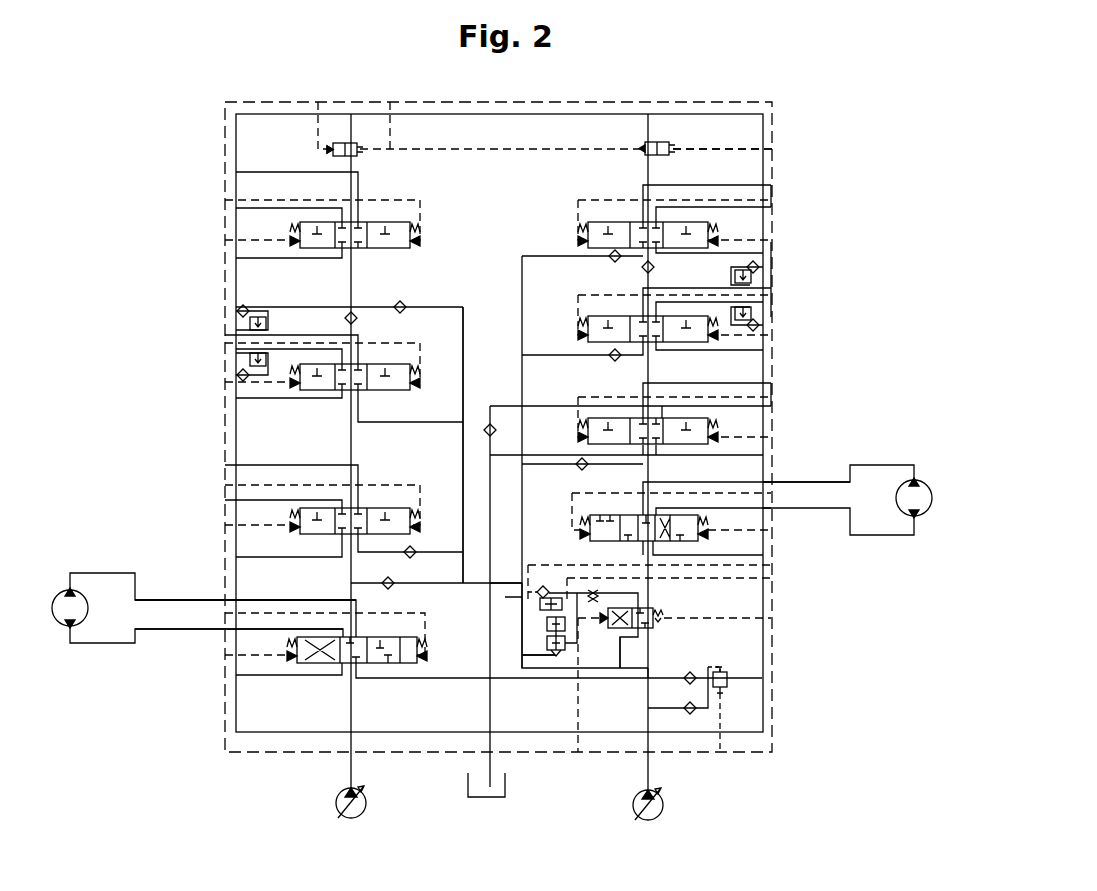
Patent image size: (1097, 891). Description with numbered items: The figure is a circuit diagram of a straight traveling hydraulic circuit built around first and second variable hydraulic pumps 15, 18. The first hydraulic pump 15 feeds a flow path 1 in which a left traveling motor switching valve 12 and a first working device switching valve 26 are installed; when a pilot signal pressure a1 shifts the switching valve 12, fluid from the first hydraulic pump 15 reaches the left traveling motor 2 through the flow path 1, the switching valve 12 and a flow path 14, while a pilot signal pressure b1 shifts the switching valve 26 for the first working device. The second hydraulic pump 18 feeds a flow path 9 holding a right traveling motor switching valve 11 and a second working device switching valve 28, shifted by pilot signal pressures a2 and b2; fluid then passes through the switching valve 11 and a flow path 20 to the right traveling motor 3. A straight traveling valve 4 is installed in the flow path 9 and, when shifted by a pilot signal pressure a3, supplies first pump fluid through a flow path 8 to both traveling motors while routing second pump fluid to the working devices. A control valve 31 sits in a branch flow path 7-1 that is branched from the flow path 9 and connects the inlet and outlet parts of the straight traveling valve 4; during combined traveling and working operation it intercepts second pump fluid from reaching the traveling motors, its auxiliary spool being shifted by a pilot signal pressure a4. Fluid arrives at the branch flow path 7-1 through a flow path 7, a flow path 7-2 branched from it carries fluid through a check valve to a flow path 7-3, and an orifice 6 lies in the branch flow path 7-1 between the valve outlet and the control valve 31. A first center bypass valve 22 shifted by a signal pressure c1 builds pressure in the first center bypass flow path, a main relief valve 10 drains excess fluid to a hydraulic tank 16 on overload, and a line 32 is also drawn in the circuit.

The flow path 1 is at (353, 703).
The left traveling motor 2 is at (60, 592).
The right traveling motor 3 is at (925, 483).
The straight traveling valve 4 is at (653, 603).
The orifice 6 is at (592, 592).
The flow path 7 is at (521, 530).
The branch flow path 7-1 is at (538, 655).
The flow path 7-2 is at (505, 597).
The flow path 7-3 is at (552, 586).
The flow path 8 is at (620, 645).
The flow path 9 is at (652, 648).
The main relief valve 10 is at (725, 671).
The switching valve 11 is at (683, 514).
The switching valve 12 is at (393, 638).
The flow path 14 is at (176, 598).
The first variable hydraulic pump 15 is at (338, 794).
The hydraulic tank 16 is at (468, 780).
The second variable hydraulic pump 18 is at (635, 796).
The flow path 20 is at (818, 481).
The first center bypass valve 22 is at (627, 158).
The switching valve 26 is at (385, 250).
The switching valve 28 is at (598, 313).
The control valve 31 is at (538, 623).
The hydraulic line 32 is at (463, 449).
The pilot signal pressure a1 is at (311, 628).
The pilot signal pressure a2 is at (686, 505).
The pilot signal pressure a3 is at (668, 698).
The pilot signal pressure a4 is at (664, 578).
The pilot signal pressure b1 is at (309, 214).
The pilot signal pressure b2 is at (691, 310).
The signal pressure c1 is at (737, 146).